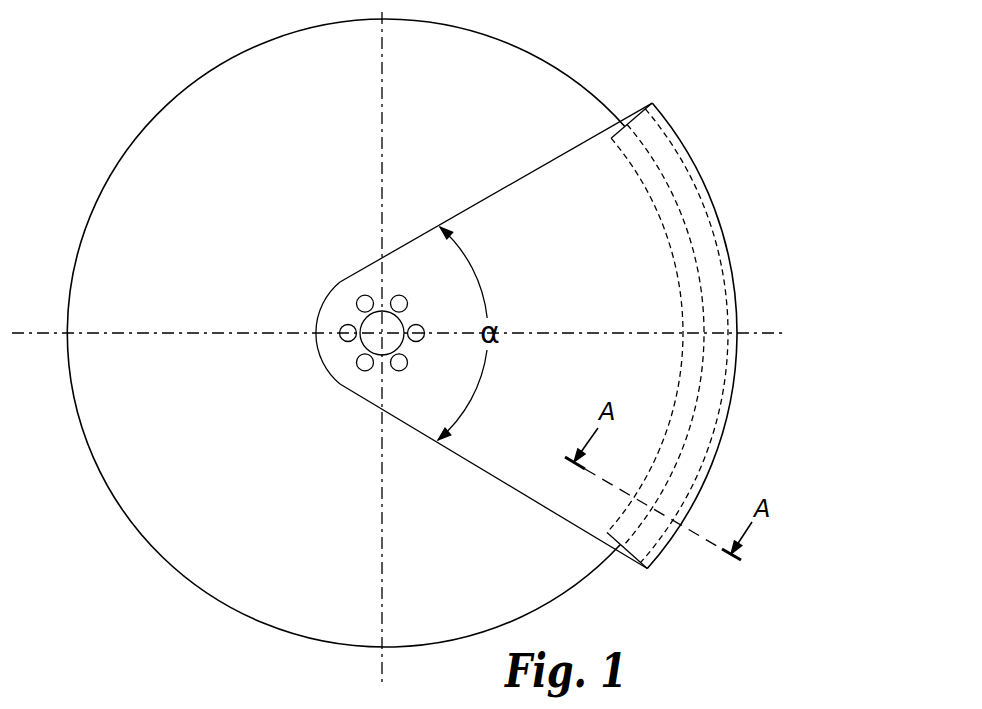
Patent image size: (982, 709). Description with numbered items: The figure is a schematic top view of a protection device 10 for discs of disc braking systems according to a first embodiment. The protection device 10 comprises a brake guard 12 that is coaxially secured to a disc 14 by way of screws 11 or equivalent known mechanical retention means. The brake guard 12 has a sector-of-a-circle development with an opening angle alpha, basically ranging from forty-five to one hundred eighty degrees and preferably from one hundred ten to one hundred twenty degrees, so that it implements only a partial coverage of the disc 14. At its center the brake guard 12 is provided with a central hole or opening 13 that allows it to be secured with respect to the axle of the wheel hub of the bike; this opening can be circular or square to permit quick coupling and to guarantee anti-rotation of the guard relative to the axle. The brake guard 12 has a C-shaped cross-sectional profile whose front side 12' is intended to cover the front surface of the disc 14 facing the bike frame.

The protection device 10 is at (718, 93).
The screws 11 is at (365, 362).
The brake guard 12 is at (733, 335).
The front side 12' is at (689, 335).
The central hole or opening 13 is at (382, 333).
The disc 14 is at (532, 79).